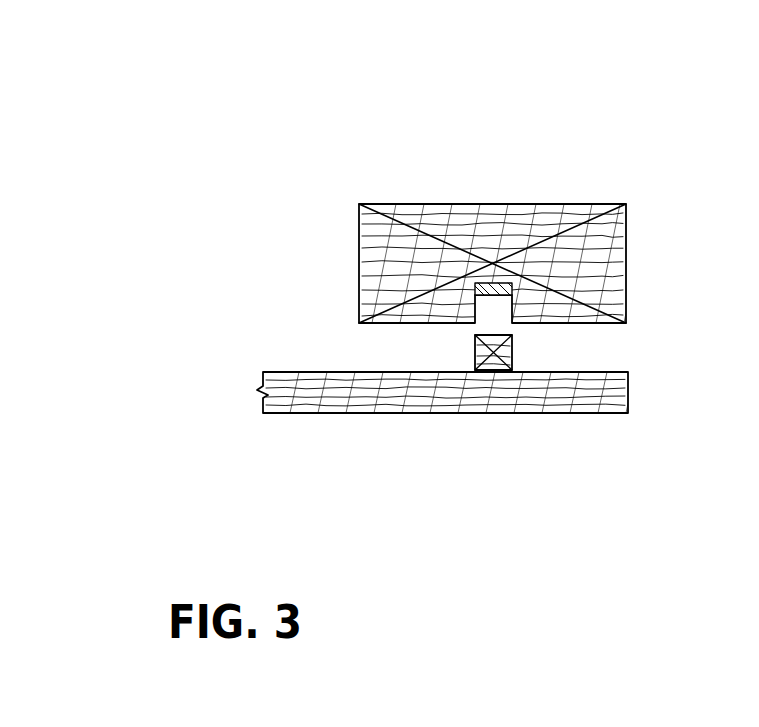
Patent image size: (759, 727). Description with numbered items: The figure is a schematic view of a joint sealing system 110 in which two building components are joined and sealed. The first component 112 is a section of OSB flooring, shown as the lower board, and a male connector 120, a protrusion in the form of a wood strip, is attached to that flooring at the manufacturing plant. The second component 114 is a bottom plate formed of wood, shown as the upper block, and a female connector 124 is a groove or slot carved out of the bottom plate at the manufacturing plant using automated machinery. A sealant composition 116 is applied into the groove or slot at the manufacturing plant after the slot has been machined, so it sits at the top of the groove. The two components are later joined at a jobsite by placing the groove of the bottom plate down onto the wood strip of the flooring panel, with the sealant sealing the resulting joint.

The joint sealing system 110 is at (420, 126).
The first component 112 is at (591, 417).
The second component 114 is at (573, 203).
The sealant composition 116 is at (464, 286).
The male connector 120 is at (512, 352).
The female connector 124 is at (510, 297).